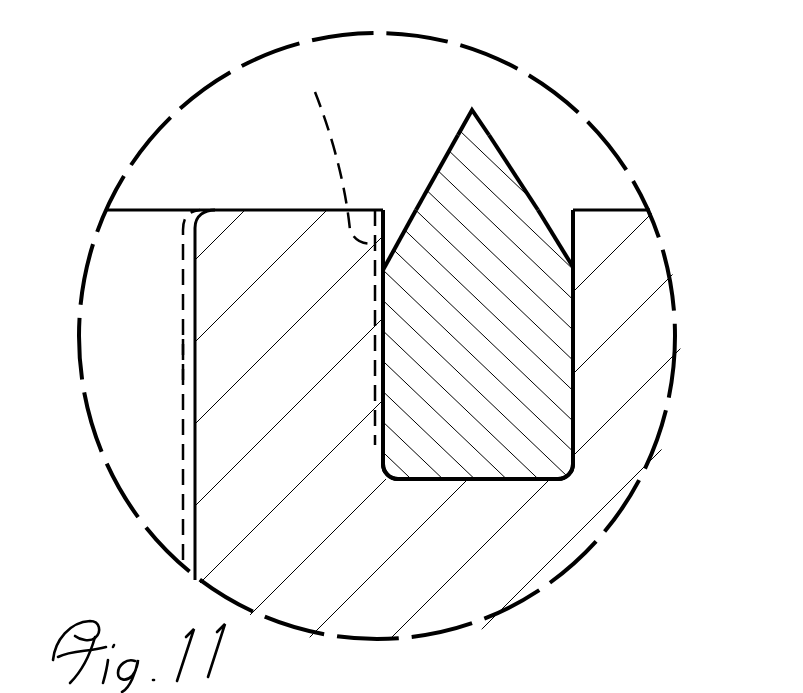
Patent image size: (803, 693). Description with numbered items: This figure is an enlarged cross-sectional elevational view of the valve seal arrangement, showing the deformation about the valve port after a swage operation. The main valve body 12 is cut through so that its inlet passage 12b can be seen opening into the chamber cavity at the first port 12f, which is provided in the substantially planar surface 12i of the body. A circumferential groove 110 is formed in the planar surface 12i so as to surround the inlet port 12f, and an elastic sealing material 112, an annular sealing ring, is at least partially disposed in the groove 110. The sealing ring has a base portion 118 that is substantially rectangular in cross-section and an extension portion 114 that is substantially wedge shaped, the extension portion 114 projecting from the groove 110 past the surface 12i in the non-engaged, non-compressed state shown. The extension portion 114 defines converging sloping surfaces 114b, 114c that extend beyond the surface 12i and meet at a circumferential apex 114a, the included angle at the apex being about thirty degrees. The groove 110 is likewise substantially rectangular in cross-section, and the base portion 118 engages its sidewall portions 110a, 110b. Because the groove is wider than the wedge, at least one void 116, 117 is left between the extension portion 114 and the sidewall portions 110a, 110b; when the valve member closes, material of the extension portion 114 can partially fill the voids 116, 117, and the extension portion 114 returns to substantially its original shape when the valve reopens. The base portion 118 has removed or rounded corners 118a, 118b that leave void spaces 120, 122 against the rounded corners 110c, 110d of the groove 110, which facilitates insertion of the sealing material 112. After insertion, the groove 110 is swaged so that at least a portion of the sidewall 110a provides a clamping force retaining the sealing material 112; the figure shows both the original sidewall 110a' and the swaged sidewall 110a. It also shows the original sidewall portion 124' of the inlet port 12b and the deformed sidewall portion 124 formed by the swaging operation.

The main valve body 12 is at (523, 552).
The inlet passage 12b is at (137, 457).
The first port 12f is at (168, 203).
The planar surface 12i is at (288, 203).
The circumferential groove 110 is at (383, 176).
The sidewall portion of groove 110a is at (419, 229).
The original sidewall of groove 110a' is at (331, 254).
The sidewall portion of groove 110b is at (571, 220).
The rounded corner of groove 110c is at (569, 461).
The rounded corner of groove 110d is at (392, 471).
The elastic sealing material 112 is at (542, 188).
The extension portion 114 is at (478, 203).
The circumferential apex 114a is at (472, 110).
The sloping surface 114b is at (510, 162).
The sloping surface 114c is at (445, 150).
The void 116 is at (381, 238).
The void 117 is at (563, 233).
The base portion 118 is at (547, 383).
The rounded corner of base portion 118a is at (570, 478).
The rounded corner of base portion 118b is at (395, 482).
The void space 120 is at (565, 475).
The void space 122 is at (392, 481).
The deformed sidewall portion of inlet port 124 is at (150, 385).
The original sidewall portion of inlet port 124' is at (135, 363).